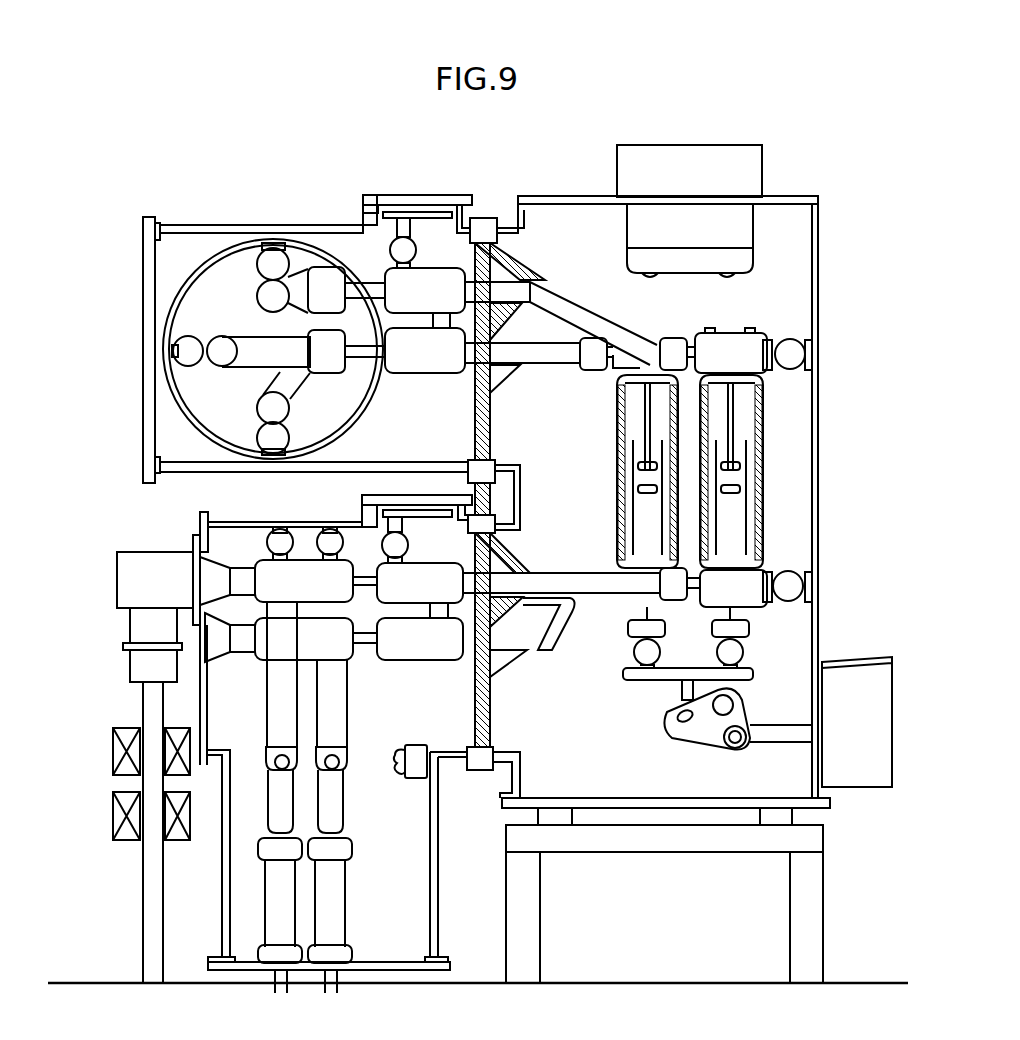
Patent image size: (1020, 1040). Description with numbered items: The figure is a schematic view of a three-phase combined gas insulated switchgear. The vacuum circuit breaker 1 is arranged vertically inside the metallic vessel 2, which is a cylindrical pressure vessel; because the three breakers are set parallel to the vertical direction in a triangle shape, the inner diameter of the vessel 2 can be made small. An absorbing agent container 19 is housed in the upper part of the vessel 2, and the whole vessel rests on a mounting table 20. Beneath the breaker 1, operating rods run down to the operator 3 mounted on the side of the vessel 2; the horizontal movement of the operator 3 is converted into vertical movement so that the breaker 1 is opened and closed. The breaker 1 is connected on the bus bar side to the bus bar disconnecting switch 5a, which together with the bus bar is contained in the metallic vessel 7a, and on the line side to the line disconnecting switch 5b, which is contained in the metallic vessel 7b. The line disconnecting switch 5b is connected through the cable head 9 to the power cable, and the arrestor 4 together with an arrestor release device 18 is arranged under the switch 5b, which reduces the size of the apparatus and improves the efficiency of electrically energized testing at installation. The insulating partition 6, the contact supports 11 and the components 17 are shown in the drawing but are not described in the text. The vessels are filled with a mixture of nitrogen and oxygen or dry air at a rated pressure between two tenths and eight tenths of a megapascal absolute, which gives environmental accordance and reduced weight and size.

The vacuum circuit breaker 1 is at (767, 436).
The metallic vessel 2 is at (820, 268).
The operator 3 is at (866, 787).
The arrestor 4 is at (335, 913).
The bus bar disconnecting switch 5a is at (375, 285).
The line disconnecting switch 5b is at (370, 565).
The insulating partition plate 6 is at (483, 220).
The metallic vessel 7a is at (180, 225).
The metallic vessel 7b is at (262, 523).
The cable head 9 is at (118, 580).
The contact support insulator 11 is at (792, 343).
The current transformer 17 is at (112, 748).
The arrestor release device 18 is at (337, 805).
The absorbing agent container 19 is at (745, 240).
The mounting table 20 is at (820, 910).